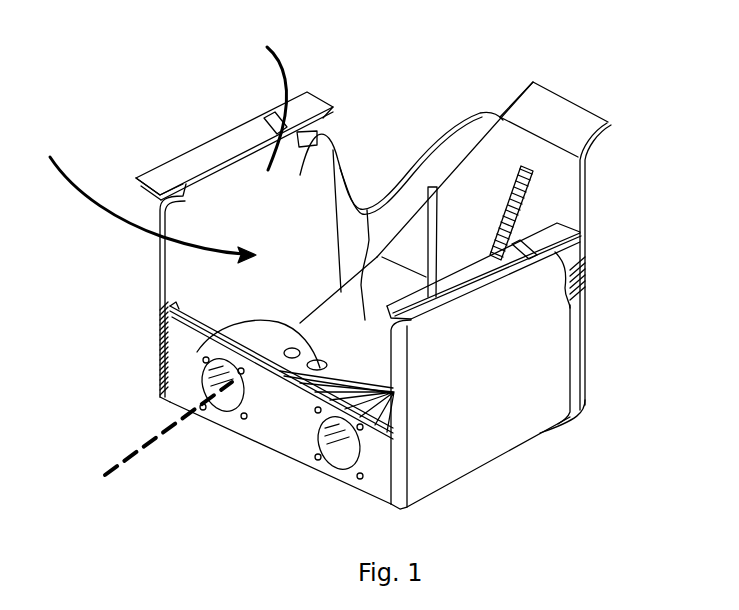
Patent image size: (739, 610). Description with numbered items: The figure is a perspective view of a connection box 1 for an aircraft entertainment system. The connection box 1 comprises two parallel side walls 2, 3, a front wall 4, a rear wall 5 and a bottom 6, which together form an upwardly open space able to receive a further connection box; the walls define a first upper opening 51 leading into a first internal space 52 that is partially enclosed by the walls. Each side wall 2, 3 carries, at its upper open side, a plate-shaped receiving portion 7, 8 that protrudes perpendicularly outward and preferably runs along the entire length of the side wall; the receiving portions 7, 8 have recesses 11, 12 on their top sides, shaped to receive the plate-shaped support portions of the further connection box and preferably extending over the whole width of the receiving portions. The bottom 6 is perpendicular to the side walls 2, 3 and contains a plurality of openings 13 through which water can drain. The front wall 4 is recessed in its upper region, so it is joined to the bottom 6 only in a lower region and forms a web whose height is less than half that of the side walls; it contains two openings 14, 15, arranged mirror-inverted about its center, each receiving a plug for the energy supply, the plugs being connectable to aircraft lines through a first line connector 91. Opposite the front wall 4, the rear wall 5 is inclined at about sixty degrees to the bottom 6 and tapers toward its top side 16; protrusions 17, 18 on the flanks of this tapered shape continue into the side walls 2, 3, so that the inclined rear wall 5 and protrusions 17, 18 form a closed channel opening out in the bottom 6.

The connection box 1 is at (117, 243).
The side wall 2 is at (480, 433).
The side wall 3 is at (353, 140).
The front wall 4 is at (276, 430).
The rear wall 5 is at (557, 173).
The bottom 6 is at (426, 152).
The receiving portion 7 is at (483, 273).
The receiving portion 8 is at (212, 152).
The recess 11 is at (447, 305).
The recess 12 is at (175, 173).
The openings 13 is at (160, 348).
The opening 14 is at (340, 448).
The opening 15 is at (216, 393).
The top side 16 is at (550, 110).
The protrusion 17 is at (583, 223).
The protrusion 18 is at (458, 138).
The first upper opening 51 is at (263, 98).
The first internal space 52 is at (141, 196).
The first line connector 91 is at (165, 427).